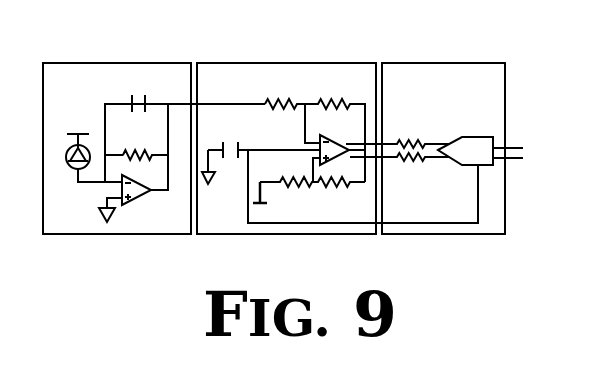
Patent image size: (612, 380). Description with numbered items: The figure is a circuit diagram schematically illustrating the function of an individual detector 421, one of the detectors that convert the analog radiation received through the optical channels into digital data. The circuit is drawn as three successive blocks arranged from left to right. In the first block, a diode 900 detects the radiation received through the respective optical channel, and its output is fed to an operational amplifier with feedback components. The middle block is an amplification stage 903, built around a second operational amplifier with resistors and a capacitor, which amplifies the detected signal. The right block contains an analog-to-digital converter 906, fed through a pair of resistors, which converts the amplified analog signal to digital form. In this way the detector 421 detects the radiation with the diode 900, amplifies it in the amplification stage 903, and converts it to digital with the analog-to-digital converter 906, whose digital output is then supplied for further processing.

The detector 421 is at (134, 29).
The diode 900 is at (64, 151).
The amplification stage 903 is at (243, 228).
The analog-to-digital converter 906 is at (478, 135).